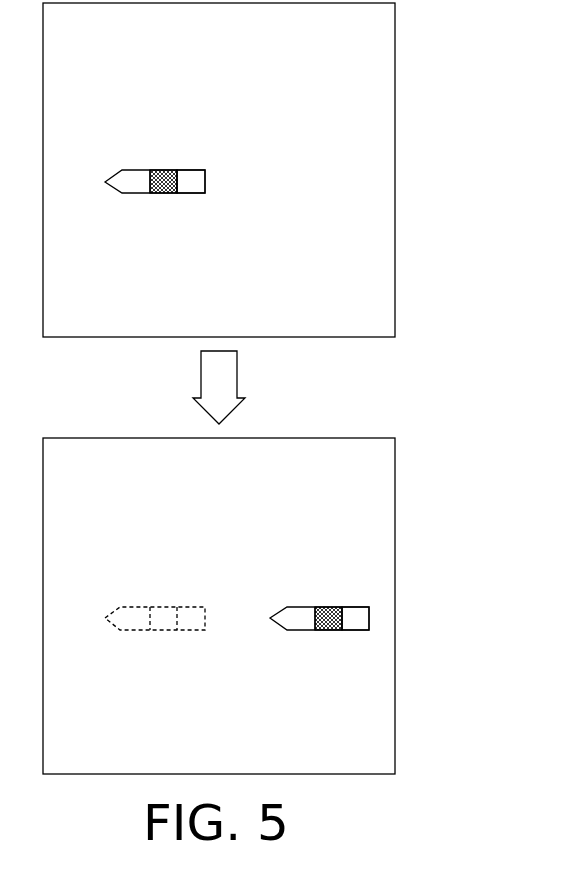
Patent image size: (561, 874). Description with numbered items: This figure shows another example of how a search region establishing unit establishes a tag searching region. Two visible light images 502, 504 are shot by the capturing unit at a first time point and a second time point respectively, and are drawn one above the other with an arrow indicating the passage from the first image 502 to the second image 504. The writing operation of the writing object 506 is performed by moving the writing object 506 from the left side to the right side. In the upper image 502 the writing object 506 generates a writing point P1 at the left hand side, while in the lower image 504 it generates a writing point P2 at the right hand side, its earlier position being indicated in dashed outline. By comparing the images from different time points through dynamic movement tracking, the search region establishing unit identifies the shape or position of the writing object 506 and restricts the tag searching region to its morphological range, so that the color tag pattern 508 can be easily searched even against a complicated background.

The image 502 is at (397, 170).
The image 504 is at (397, 605).
The writing point P1 is at (108, 178).
The writing point P2 is at (273, 615).
The writing object 506 is at (191, 170).
The color tag pattern 508 is at (157, 170).